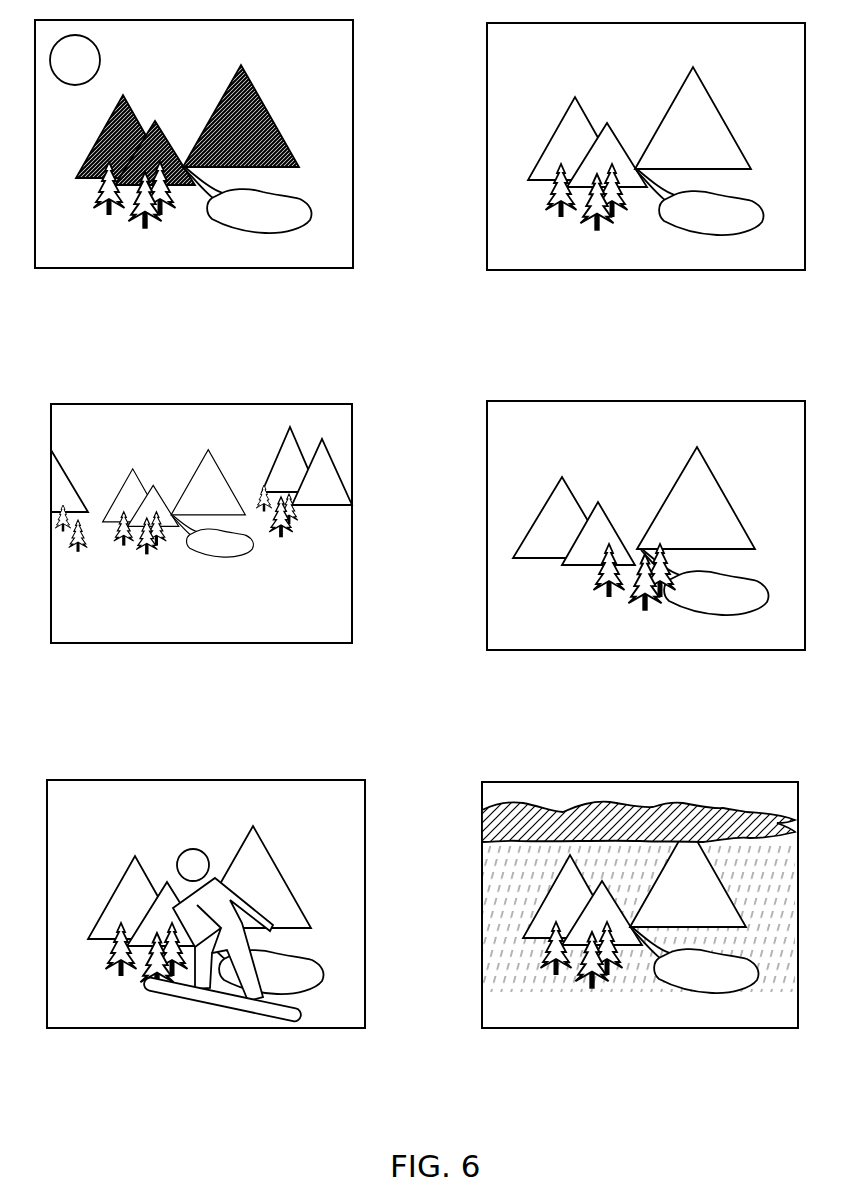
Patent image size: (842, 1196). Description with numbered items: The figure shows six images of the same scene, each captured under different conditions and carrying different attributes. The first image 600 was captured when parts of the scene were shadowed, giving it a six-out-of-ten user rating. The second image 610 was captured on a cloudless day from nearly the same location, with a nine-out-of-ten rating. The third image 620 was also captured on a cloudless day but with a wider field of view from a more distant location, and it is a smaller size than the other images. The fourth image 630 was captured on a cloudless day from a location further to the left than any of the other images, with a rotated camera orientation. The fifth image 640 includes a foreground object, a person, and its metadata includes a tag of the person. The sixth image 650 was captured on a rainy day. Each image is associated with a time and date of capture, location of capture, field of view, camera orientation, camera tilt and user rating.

The first image 600 is at (210, 268).
The second image 610 is at (652, 271).
The third image 620 is at (205, 643).
The fourth image 630 is at (648, 650).
The fifth image 640 is at (228, 1029).
The sixth image 650 is at (642, 1029).